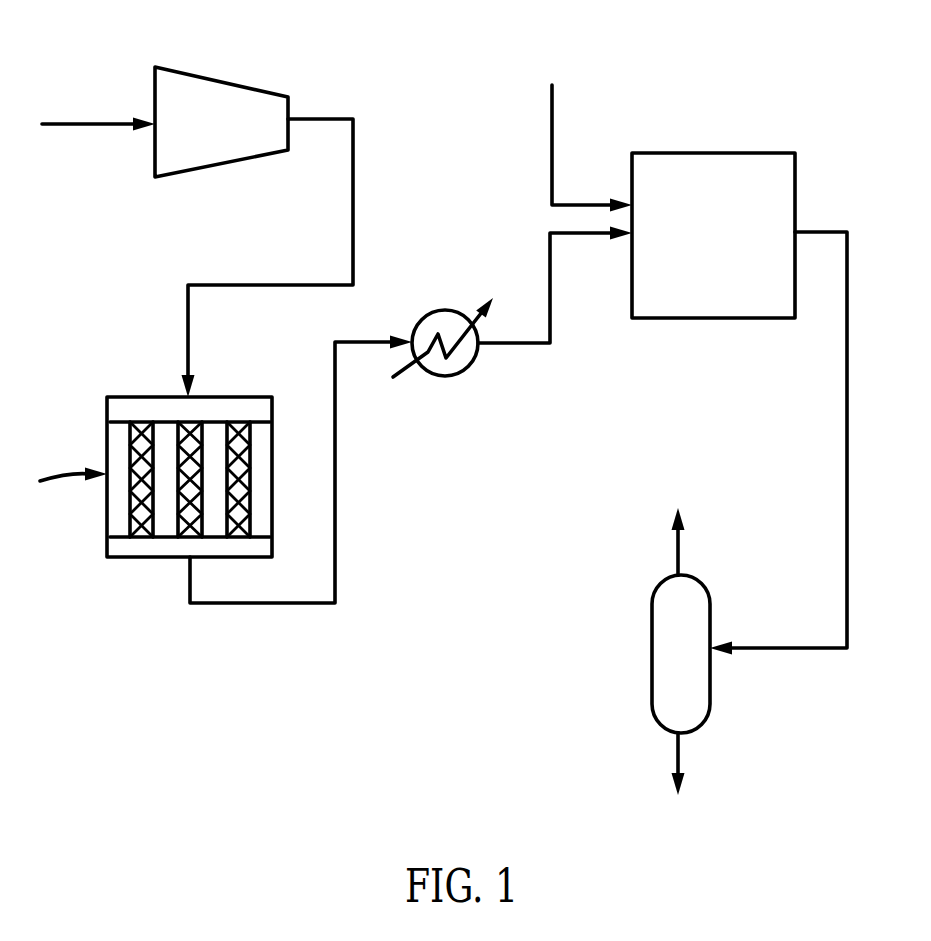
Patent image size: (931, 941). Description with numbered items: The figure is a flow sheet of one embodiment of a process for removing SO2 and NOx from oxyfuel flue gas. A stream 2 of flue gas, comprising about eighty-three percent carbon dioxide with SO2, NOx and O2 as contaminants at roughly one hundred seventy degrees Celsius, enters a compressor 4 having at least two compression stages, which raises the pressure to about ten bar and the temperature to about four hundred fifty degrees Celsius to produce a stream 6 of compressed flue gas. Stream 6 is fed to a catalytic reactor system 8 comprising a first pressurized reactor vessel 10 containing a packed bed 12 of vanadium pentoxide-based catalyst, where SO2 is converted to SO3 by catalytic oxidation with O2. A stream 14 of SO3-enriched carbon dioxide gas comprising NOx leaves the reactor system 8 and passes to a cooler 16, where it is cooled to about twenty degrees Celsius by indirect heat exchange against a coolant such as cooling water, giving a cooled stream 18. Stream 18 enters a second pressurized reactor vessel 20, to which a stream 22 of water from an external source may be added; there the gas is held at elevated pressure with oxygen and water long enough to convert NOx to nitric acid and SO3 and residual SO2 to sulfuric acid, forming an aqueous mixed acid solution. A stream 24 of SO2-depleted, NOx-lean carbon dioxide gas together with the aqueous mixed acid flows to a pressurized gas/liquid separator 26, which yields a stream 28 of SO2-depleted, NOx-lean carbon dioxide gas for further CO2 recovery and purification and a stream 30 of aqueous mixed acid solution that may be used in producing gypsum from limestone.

The stream of flue gas 2 is at (75, 122).
The compressor 4 is at (220, 78).
The stream of compressed flue gas 6 is at (353, 190).
The catalytic reactor system 8 is at (58, 488).
The first pressurized reactor vessel 10 is at (162, 487).
The packed bed 12 is at (165, 520).
The stream of SO3-enriched carbon dioxide gas 14 is at (336, 494).
The cooler 16 is at (450, 308).
The cooled stream of SO3-enriched carbon dioxide gas 18 is at (553, 300).
The second pressurized reactor vessel 20 is at (747, 153).
The stream of water 22 is at (552, 117).
The stream comprising SO2-depleted, NOx-lean carbon dioxide gas and aqueous mixed ac 24 is at (847, 430).
The pressurized gas/liquid separator 26 is at (652, 647).
The stream of SO2-depleted, NOx-lean carbon dioxide gas 28 is at (677, 555).
The stream of aqueous mixed acid solution 30 is at (678, 753).